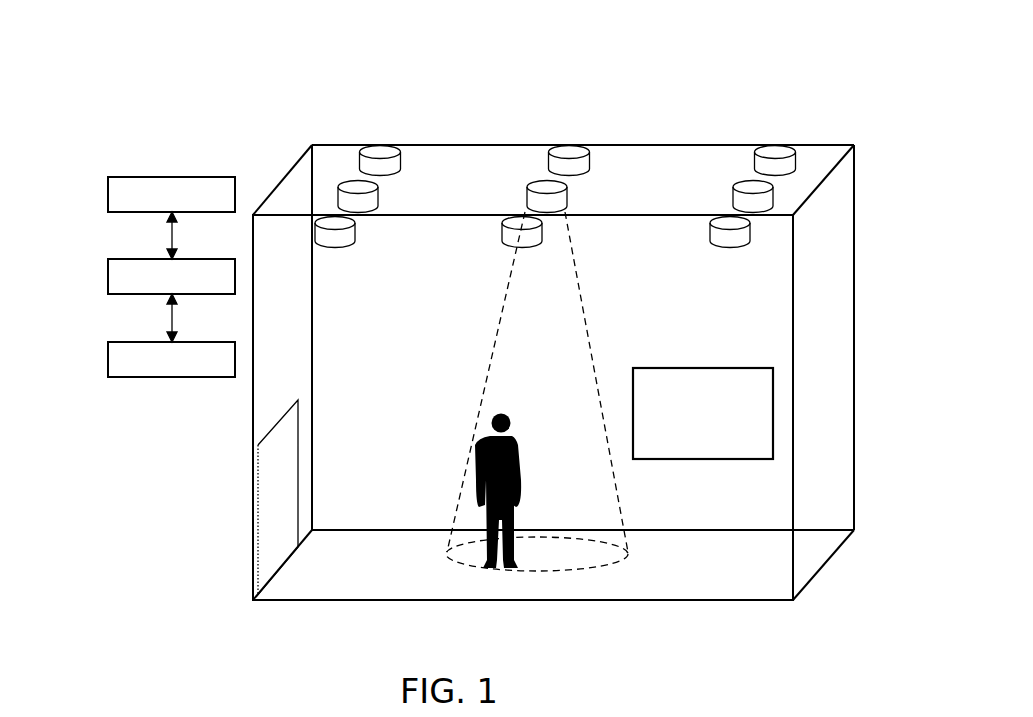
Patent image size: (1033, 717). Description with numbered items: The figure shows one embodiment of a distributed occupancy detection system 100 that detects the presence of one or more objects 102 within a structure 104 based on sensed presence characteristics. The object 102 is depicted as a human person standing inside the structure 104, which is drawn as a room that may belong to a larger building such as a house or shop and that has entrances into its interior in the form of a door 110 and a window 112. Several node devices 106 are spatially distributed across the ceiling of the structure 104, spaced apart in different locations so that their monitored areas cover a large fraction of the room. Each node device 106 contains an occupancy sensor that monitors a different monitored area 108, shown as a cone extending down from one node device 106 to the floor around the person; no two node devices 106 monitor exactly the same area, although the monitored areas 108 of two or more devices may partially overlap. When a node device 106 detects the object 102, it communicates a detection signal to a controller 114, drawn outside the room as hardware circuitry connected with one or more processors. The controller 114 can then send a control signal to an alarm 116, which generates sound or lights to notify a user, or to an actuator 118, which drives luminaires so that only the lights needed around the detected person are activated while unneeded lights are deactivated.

The distributed occupancy detection system 100 is at (854, 123).
The object 102 is at (507, 410).
The structure 104 is at (856, 335).
The node devices 106 is at (333, 249).
The monitored area 108 is at (577, 493).
The door 110 is at (285, 413).
The window 112 is at (703, 367).
The controller 114 is at (107, 192).
The alarm 116 is at (107, 275).
The actuator 118 is at (107, 357).